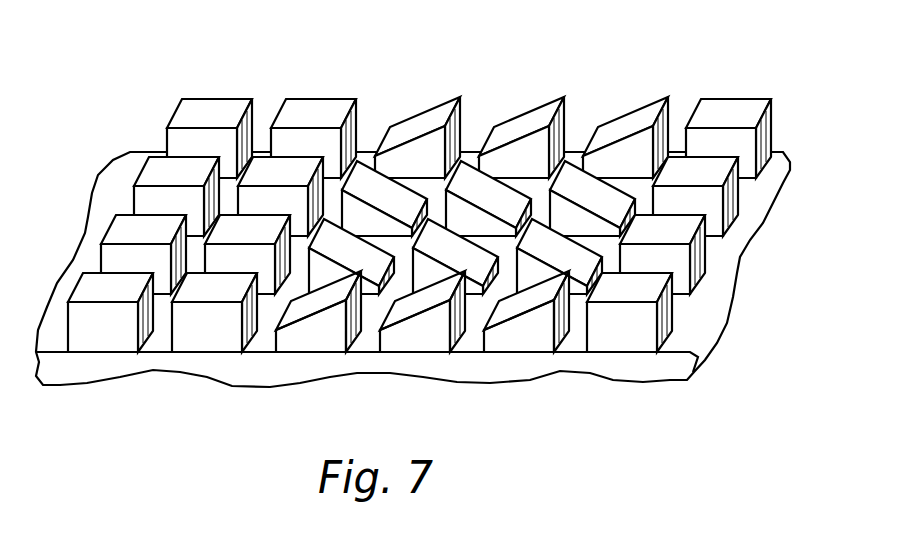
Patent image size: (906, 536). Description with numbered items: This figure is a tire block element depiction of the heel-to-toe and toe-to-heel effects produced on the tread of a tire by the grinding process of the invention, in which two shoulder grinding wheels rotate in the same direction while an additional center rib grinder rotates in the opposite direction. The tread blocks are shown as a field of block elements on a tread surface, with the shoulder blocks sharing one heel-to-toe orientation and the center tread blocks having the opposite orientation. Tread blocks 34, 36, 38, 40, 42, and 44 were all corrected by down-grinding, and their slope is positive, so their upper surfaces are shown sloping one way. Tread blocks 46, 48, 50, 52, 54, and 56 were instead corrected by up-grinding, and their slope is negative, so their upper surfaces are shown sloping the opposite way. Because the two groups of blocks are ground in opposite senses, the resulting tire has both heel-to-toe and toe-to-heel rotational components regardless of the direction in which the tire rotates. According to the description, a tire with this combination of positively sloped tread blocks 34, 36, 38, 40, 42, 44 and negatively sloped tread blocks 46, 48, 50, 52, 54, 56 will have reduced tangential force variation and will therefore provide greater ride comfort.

The tread block 34 is at (417, 121).
The tread block 36 is at (521, 121).
The tread block 38 is at (625, 121).
The tread block 40 is at (310, 349).
The tread block 42 is at (419, 349).
The tread block 44 is at (517, 349).
The tread block 46 is at (411, 133).
The tread block 48 is at (518, 127).
The tread block 50 is at (631, 131).
The tread block 52 is at (297, 320).
The tread block 54 is at (413, 316).
The tread block 56 is at (653, 265).